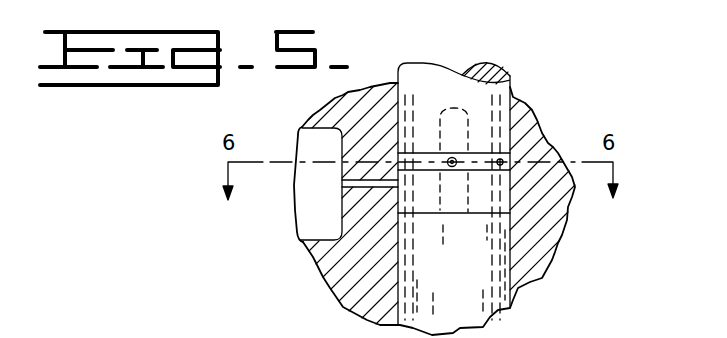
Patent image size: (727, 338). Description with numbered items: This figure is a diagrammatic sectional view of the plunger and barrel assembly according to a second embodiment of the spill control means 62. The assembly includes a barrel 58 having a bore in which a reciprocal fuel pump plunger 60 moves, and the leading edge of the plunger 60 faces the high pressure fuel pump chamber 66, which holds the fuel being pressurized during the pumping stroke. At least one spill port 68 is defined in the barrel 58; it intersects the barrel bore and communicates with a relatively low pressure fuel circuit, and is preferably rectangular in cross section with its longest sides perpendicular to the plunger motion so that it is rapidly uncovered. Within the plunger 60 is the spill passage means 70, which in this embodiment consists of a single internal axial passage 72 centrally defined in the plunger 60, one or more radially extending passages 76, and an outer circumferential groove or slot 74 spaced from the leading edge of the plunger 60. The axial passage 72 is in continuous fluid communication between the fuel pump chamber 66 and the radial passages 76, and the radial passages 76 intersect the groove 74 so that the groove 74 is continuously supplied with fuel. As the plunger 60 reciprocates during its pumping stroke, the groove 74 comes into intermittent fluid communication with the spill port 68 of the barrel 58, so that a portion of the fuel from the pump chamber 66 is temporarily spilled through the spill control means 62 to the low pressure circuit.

The barrel 58 is at (555, 250).
The fuel pump plunger 60 is at (549, 8).
The spill control means 62 is at (276, 218).
The high pressure fuel pump chamber 66 is at (473, 299).
The spill port 68 is at (346, 184).
The spill passage means 70 is at (546, 193).
The internal axial passage 72 is at (488, 230).
The outer circumferential groove 74 is at (507, 154).
The radially extending passages 76 is at (447, 159).